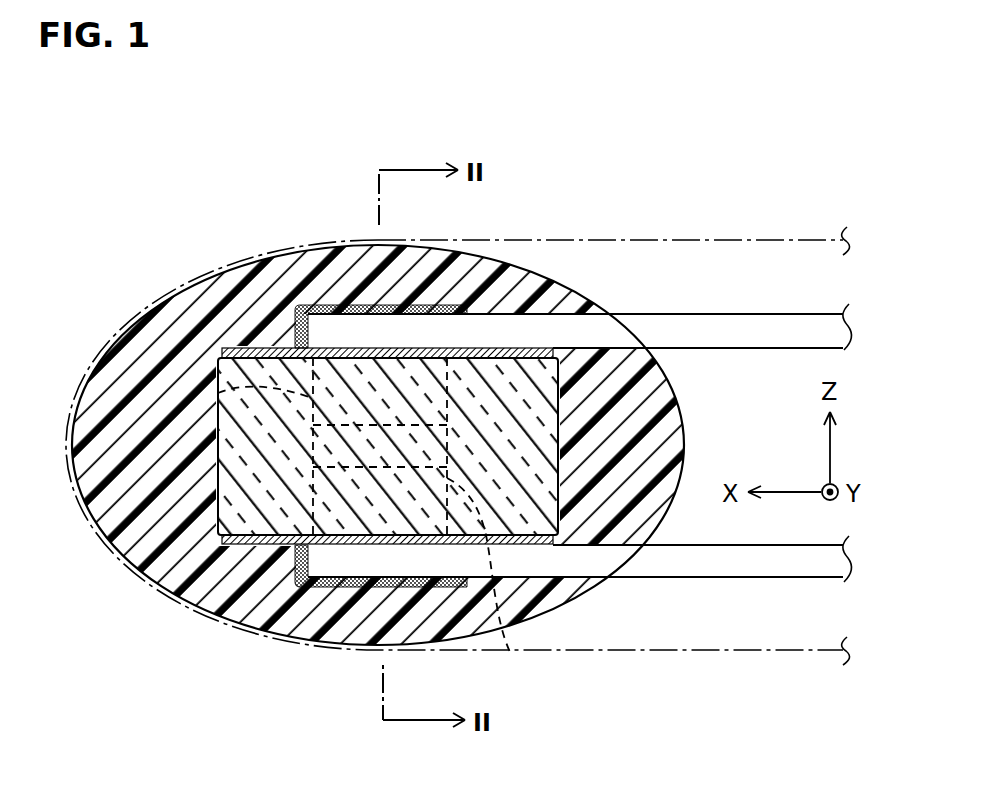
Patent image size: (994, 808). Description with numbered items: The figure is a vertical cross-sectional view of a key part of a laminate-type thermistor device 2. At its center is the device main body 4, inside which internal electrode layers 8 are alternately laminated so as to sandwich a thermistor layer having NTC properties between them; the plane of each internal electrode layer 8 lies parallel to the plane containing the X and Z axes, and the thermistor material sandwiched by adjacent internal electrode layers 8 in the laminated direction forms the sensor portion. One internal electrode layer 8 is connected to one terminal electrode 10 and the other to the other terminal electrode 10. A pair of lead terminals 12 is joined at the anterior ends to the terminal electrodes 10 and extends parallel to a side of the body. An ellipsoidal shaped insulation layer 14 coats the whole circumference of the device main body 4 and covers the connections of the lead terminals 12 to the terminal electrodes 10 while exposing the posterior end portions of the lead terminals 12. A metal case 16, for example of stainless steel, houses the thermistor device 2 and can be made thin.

The laminate-type thermistor device 2 is at (688, 400).
The device main body 4 is at (253, 480).
The internal electrode layer 8 is at (218, 393).
The terminal electrode 10 is at (272, 345).
The lead terminal 12 is at (730, 327).
The insulation layer 14 is at (158, 353).
The metal case 16 is at (583, 241).